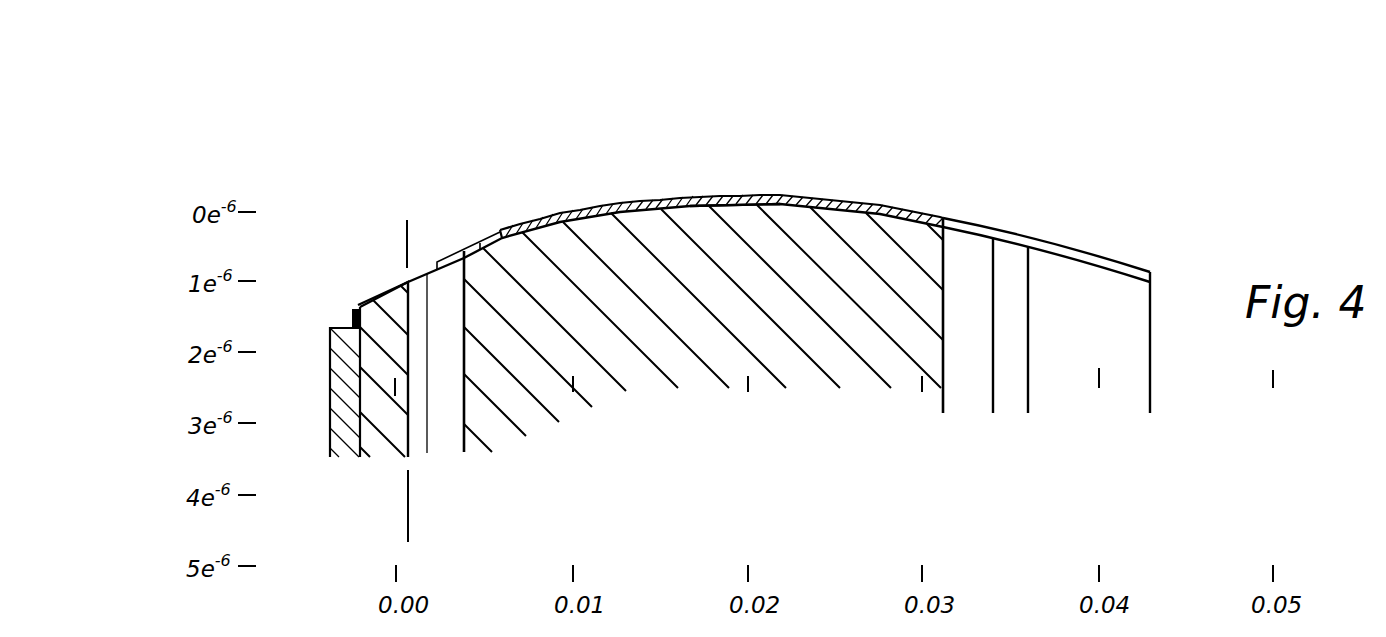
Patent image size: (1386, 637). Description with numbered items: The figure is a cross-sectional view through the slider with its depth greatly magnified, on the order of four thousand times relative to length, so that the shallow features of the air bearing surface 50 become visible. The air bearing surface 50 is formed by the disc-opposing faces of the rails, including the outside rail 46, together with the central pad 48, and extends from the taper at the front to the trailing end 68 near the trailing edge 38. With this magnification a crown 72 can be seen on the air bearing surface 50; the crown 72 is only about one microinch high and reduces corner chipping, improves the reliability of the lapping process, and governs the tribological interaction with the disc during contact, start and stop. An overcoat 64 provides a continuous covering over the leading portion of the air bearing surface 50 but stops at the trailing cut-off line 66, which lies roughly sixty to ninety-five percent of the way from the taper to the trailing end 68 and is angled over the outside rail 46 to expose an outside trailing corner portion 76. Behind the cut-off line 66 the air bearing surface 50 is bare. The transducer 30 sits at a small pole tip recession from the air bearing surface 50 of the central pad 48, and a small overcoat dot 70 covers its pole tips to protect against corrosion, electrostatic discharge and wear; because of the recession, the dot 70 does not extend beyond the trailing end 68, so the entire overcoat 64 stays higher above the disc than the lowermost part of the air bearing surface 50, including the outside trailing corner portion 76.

The transducer 30 is at (340, 397).
The trailing edge 38 is at (360, 412).
The outside rail 46 is at (677, 363).
The central pad 48 is at (385, 437).
The air bearing surface 50 is at (867, 202).
The overcoat 64 is at (690, 200).
The trailing cut-off line 66 is at (503, 231).
The trailing end 68 is at (466, 258).
The overcoat dot 70 is at (352, 314).
The crown 72 is at (747, 224).
The outside trailing corner portion 76 is at (460, 247).